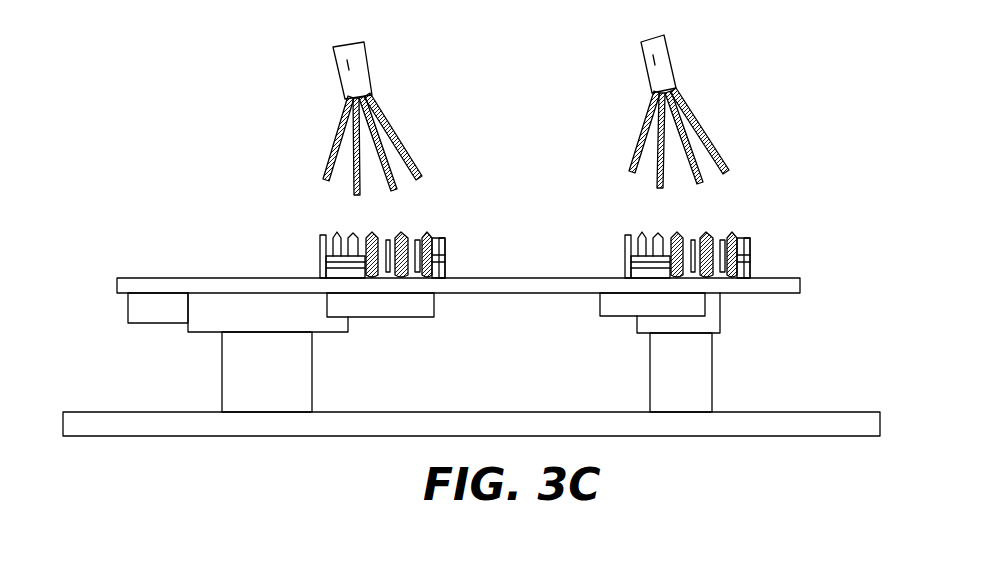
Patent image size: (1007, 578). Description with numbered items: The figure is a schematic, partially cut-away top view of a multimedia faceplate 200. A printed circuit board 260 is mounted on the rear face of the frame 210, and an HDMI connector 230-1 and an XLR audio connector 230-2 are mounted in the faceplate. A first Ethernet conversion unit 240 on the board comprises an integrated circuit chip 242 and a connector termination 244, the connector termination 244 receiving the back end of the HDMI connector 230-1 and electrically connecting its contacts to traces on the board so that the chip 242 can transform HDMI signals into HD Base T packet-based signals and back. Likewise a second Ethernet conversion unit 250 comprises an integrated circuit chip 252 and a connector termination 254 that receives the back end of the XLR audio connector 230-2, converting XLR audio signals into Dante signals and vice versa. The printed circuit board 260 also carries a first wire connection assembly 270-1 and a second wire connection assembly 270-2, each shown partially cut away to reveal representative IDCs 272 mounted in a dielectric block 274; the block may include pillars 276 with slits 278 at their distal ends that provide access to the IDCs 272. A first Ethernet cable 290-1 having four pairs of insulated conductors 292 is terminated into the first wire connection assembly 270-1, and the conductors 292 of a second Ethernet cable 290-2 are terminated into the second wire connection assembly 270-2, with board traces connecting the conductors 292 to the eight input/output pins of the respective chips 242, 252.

The multimedia faceplate 200 is at (497, 62).
The frame 210 is at (128, 412).
The HDMI connector 230-1 is at (222, 352).
The XLR audio connector 230-2 is at (712, 360).
The first Ethernet conversion unit 240 is at (333, 346).
The integrated circuit chip 242 is at (434, 303).
The connector termination 244 is at (348, 333).
The second Ethernet conversion unit 250 is at (665, 344).
The integrated circuit chip 252 is at (600, 303).
The connector termination 254 is at (720, 306).
The printed circuit board 260 is at (800, 283).
The first wire connection assembly 270-1 is at (401, 240).
The second wire connection assembly 270-2 is at (713, 210).
The IDCs 272 is at (345, 253).
The dielectric block 274 is at (445, 252).
The pillars 276 is at (643, 238).
The slits 278 is at (722, 232).
The Ethernet cable 290-1 is at (394, 76).
The second Ethernet cable 290-2 is at (690, 72).
The insulated conductors 292 is at (331, 158).